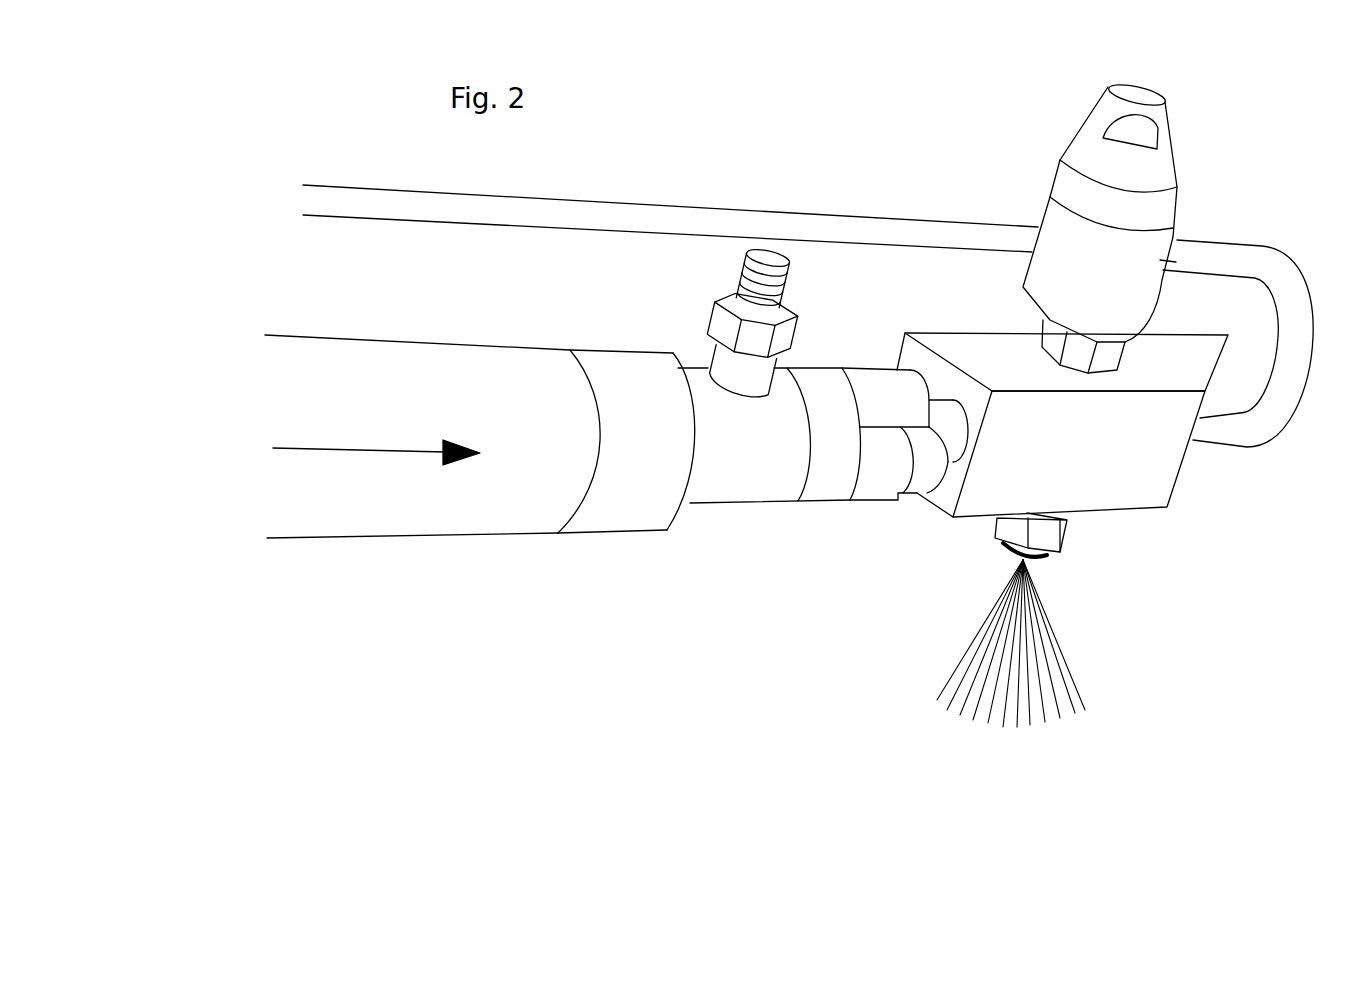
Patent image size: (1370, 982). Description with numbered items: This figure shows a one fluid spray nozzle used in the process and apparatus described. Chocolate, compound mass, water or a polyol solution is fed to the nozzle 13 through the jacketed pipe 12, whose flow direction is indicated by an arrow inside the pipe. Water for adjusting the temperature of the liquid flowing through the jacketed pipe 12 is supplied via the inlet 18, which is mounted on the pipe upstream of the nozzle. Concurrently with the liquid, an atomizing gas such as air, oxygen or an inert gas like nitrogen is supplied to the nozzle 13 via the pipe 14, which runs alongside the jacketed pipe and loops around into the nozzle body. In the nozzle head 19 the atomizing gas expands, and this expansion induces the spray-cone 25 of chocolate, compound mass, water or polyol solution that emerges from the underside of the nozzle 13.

The jacketed pipe 12 is at (448, 537).
The nozzle 13 is at (1175, 71).
The pipe 14 is at (1263, 262).
The inlet 18 is at (767, 252).
The nozzle head 19 is at (1163, 268).
The spray-cone 25 is at (1063, 663).